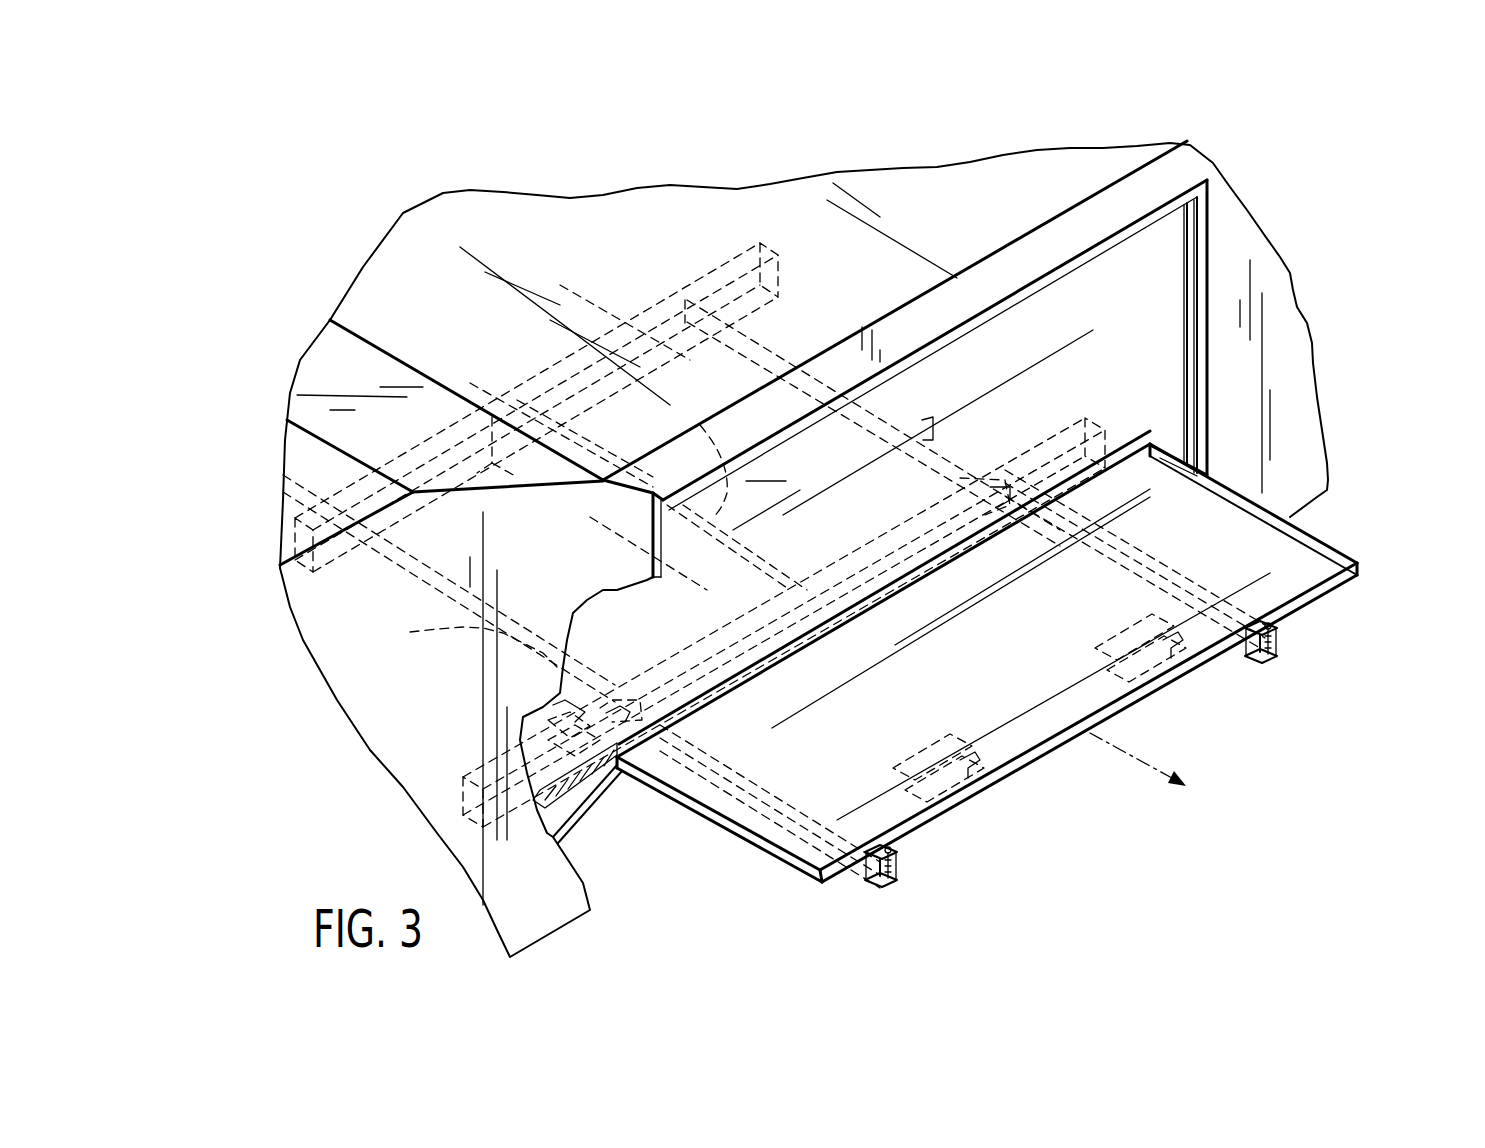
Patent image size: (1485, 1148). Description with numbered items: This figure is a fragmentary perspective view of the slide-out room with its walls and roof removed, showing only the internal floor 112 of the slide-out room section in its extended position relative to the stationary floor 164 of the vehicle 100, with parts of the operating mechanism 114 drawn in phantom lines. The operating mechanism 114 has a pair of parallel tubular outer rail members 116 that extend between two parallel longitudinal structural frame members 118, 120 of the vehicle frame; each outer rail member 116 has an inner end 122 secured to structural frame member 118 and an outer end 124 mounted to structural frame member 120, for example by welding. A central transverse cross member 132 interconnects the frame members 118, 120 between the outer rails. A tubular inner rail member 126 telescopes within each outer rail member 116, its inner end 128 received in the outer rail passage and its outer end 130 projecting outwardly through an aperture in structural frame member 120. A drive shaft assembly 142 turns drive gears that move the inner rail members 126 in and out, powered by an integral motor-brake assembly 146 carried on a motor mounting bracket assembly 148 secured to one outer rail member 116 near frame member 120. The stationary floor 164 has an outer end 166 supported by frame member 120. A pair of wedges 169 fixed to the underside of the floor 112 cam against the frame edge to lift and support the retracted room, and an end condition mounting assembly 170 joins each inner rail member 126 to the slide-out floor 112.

The vehicle 100 is at (1042, 178).
The floor 112 is at (1080, 697).
The operating mechanism 114 is at (898, 392).
The outer rail member 116 is at (900, 407).
The structural frame member 118 is at (607, 305).
The structural frame member 120 is at (1066, 470).
The inner end 122 is at (695, 297).
The outer end 124 is at (1000, 503).
The inner rail member 126 is at (1137, 590).
The inner end 128 is at (922, 420).
The outer end 130 is at (867, 862).
The central transverse cross member 132 is at (700, 425).
The drive shaft assembly 142 is at (837, 587).
The motor-brake assembly 146 is at (540, 724).
The motor mounting bracket assembly 148 is at (557, 673).
The stationary floor 164 is at (766, 465).
The outer end 166 is at (903, 565).
The wedge 169 is at (1113, 667).
The end condition mounting assembly 170 is at (925, 866).